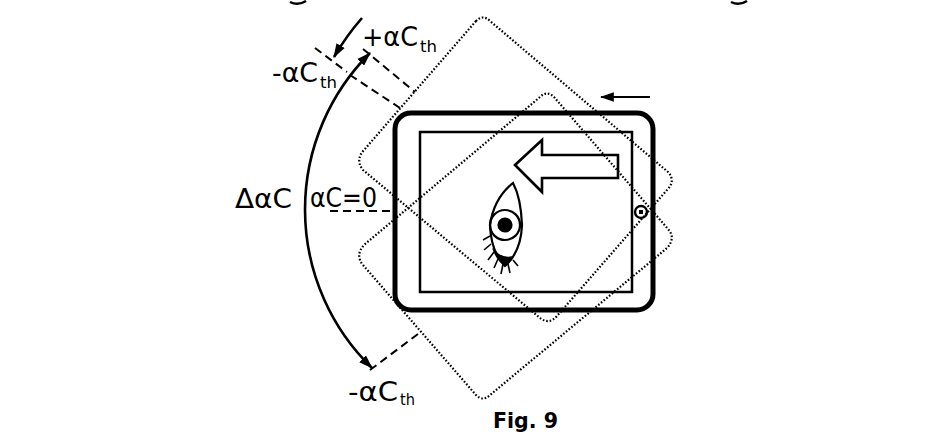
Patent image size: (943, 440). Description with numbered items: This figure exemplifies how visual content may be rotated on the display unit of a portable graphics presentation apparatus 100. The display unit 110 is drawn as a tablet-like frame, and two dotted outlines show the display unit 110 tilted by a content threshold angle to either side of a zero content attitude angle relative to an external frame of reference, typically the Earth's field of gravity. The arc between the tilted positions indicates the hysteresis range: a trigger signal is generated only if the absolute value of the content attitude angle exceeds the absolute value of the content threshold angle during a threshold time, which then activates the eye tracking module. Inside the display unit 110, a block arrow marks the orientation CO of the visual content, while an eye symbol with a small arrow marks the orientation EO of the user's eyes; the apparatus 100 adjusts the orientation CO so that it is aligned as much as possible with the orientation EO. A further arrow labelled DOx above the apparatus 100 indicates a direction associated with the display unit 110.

The graphics presentation apparatus 100 is at (563, 211).
The display unit 110 is at (558, 243).
The orientation of the user's eyes EO is at (490, 225).
The orientation of the visual content CO is at (566, 175).
The display orientation direction DOx is at (630, 81).